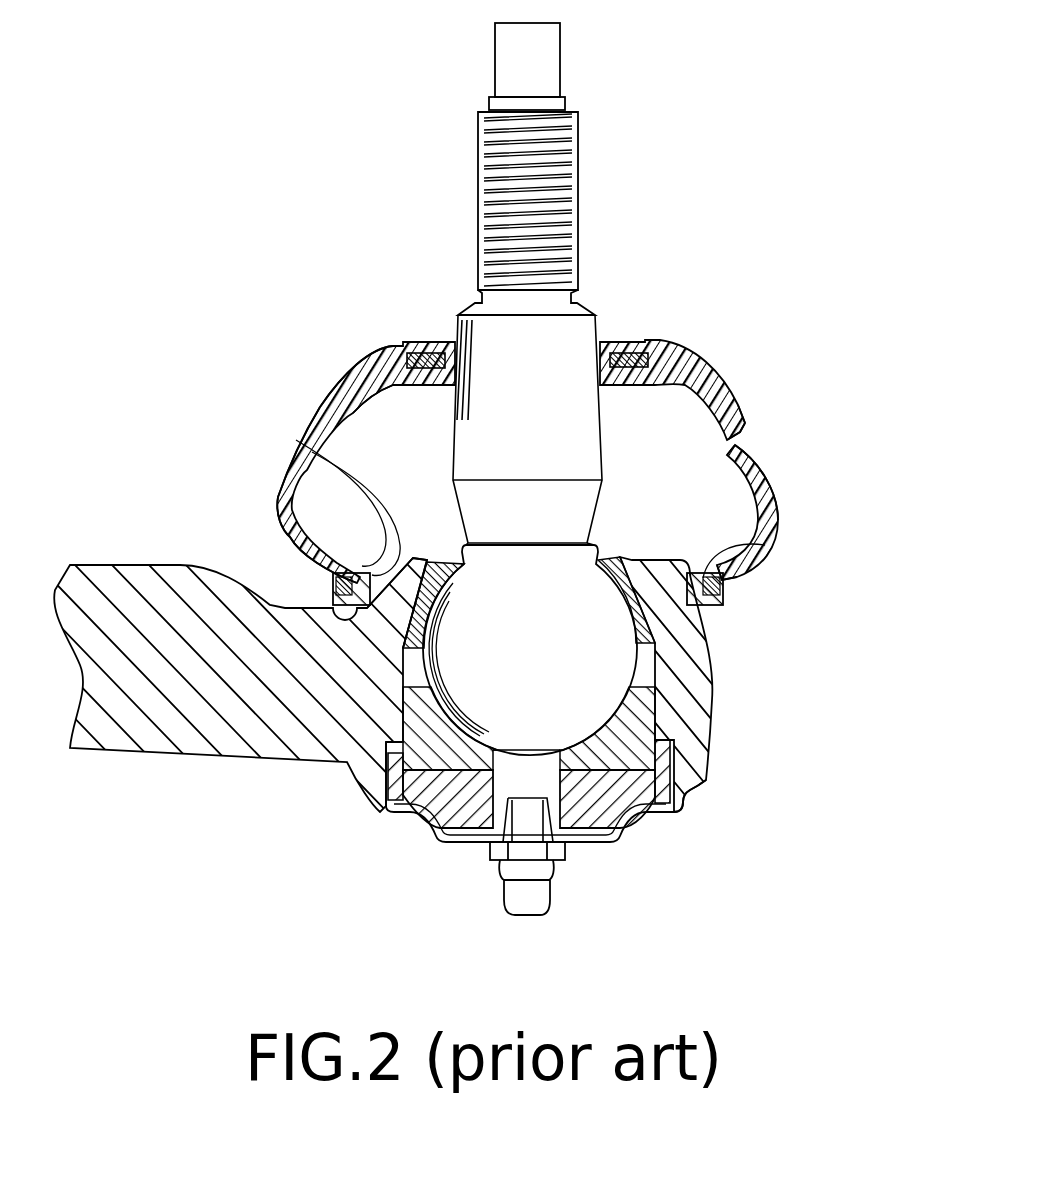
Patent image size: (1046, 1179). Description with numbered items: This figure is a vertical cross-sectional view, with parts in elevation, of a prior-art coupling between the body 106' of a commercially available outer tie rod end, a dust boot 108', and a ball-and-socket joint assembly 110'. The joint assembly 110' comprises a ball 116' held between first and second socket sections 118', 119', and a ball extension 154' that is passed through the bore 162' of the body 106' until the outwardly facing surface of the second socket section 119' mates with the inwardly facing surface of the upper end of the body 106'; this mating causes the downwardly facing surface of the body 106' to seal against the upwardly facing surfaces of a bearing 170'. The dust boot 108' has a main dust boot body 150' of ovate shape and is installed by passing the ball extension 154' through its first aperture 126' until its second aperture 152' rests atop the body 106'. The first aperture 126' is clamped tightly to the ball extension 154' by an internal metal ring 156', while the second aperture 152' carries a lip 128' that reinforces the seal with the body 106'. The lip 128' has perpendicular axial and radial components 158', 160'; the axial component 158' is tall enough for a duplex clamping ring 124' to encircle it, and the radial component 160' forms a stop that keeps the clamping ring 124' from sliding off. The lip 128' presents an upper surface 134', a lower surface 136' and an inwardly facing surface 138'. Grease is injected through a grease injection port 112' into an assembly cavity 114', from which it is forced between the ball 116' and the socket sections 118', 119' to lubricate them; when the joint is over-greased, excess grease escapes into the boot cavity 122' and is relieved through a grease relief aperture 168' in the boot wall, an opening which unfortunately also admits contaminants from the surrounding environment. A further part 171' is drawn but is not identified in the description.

The ball extension 154' is at (547, 284).
The first aperture 126' is at (425, 309).
The internal metal ring 156' is at (661, 318).
The dust boot 108' is at (528, 426).
The bore 162' is at (590, 539).
The grease relief aperture 168' is at (812, 403).
The dust boot body 150' is at (829, 456).
The axial component 158' is at (804, 512).
The boot cavity 122' is at (325, 364).
The inwardly facing surface 138' is at (301, 480).
The upper surface 134' is at (306, 504).
The lip 128' is at (270, 495).
The duplex clamping ring 124' is at (275, 552).
The lower surface 136' is at (240, 674).
The radial component 160' is at (747, 592).
The second aperture 152' is at (758, 613).
The body 106' is at (701, 684).
The ball 116' is at (706, 829).
The bearing 170' is at (553, 854).
The closure cap 171' is at (530, 837).
The joint assembly 110' is at (545, 756).
The grease injection port 112' is at (541, 917).
The assembly cavity 114' is at (491, 857).
The first socket section 118' is at (493, 853).
The second socket section 119' is at (356, 738).